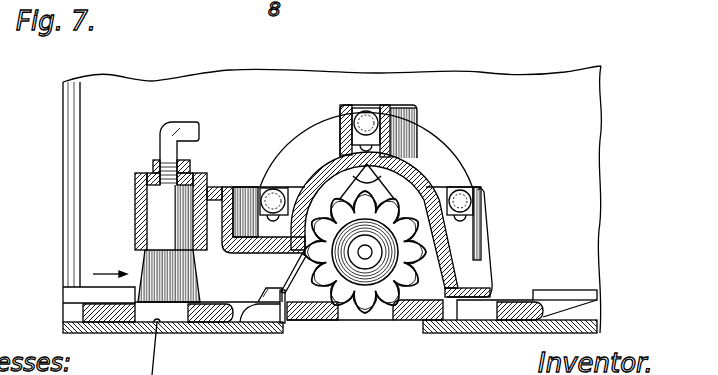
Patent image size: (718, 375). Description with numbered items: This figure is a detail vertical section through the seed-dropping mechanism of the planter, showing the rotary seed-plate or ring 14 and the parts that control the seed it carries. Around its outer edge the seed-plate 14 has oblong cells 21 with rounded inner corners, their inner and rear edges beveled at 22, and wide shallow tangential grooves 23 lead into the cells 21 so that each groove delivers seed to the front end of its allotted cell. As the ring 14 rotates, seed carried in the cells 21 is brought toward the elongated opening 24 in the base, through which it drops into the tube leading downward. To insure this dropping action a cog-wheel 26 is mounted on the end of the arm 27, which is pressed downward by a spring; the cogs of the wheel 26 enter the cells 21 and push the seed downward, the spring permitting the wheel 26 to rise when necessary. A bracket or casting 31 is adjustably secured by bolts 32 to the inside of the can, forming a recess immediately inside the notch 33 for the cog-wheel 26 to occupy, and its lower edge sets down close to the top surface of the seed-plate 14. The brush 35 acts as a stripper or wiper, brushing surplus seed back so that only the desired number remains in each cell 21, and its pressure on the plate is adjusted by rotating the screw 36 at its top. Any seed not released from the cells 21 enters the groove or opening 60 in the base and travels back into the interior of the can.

The rotary seed-plate or ring 14 is at (111, 331).
The cells 21 is at (75, 316).
The beveled edges 22 is at (248, 314).
The grooves 23 is at (96, 303).
The elongated opening 24 is at (284, 330).
The cog-wheel 26 is at (365, 320).
The arm 27 is at (455, 257).
The bracket or casting 31 is at (422, 137).
The bolts 32 is at (358, 125).
The notch 33 is at (415, 168).
The brush 35 is at (198, 284).
The screw 36 is at (170, 140).
The groove or opening 60 is at (488, 309).